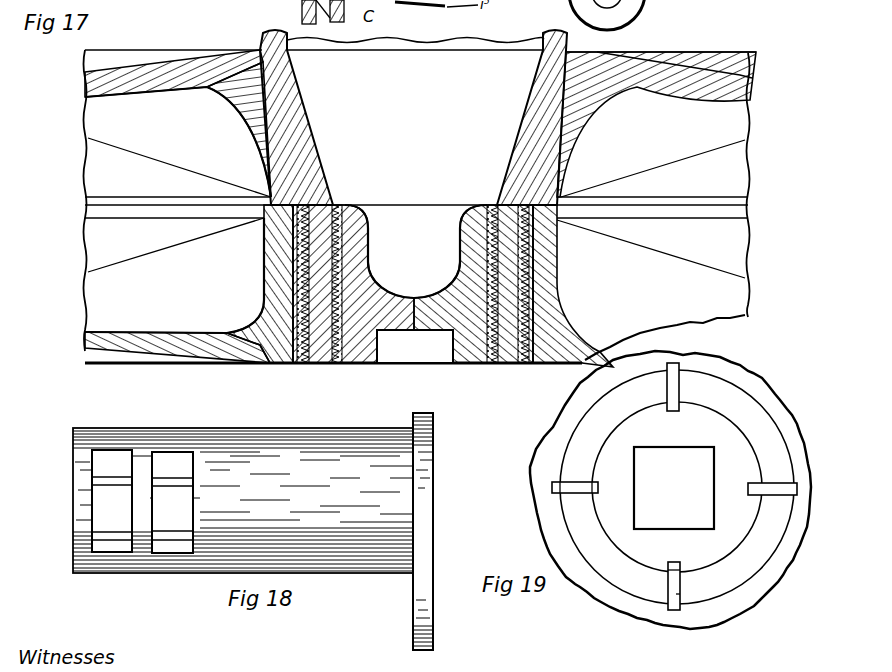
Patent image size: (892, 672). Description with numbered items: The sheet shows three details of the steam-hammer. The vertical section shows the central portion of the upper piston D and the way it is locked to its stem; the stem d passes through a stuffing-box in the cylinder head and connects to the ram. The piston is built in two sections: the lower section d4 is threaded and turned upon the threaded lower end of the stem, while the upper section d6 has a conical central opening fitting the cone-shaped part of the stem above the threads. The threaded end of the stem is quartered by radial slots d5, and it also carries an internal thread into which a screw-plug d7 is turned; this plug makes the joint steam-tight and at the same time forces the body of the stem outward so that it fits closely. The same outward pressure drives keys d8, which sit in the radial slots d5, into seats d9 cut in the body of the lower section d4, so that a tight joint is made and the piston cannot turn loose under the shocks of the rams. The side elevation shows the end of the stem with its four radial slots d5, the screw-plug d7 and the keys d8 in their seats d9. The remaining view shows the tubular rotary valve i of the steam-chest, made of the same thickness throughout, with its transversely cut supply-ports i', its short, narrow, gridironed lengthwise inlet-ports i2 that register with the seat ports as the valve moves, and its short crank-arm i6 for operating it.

In FIG. 17, the upper piston D is at (268, 365).
In FIG. 19, the upper piston D is at (550, 524).
In FIG. 17, the stem of the lower piston d is at (413, 196).
In FIG. 17, the lower section of the piston d4 is at (174, 275).
In FIG. 19, the radial slots d5 is at (680, 366).
In FIG. 17, the upper section of the piston d6 is at (178, 142).
In FIG. 17, the screw-plug d7 is at (416, 251).
In FIG. 19, the screw-plug d7 is at (674, 473).
In FIG. 17, the keys d8 is at (313, 366).
In FIG. 19, the keys d8 is at (570, 486).
In FIG. 19, the seats d9 is at (595, 485).
In FIG. 18, the rotary valve i is at (243, 516).
In FIG. 18, the supply-ports i' is at (114, 501).
In FIG. 18, the inlet-ports i2 is at (121, 465).
In FIG. 18, the crank-arm i6 is at (433, 622).